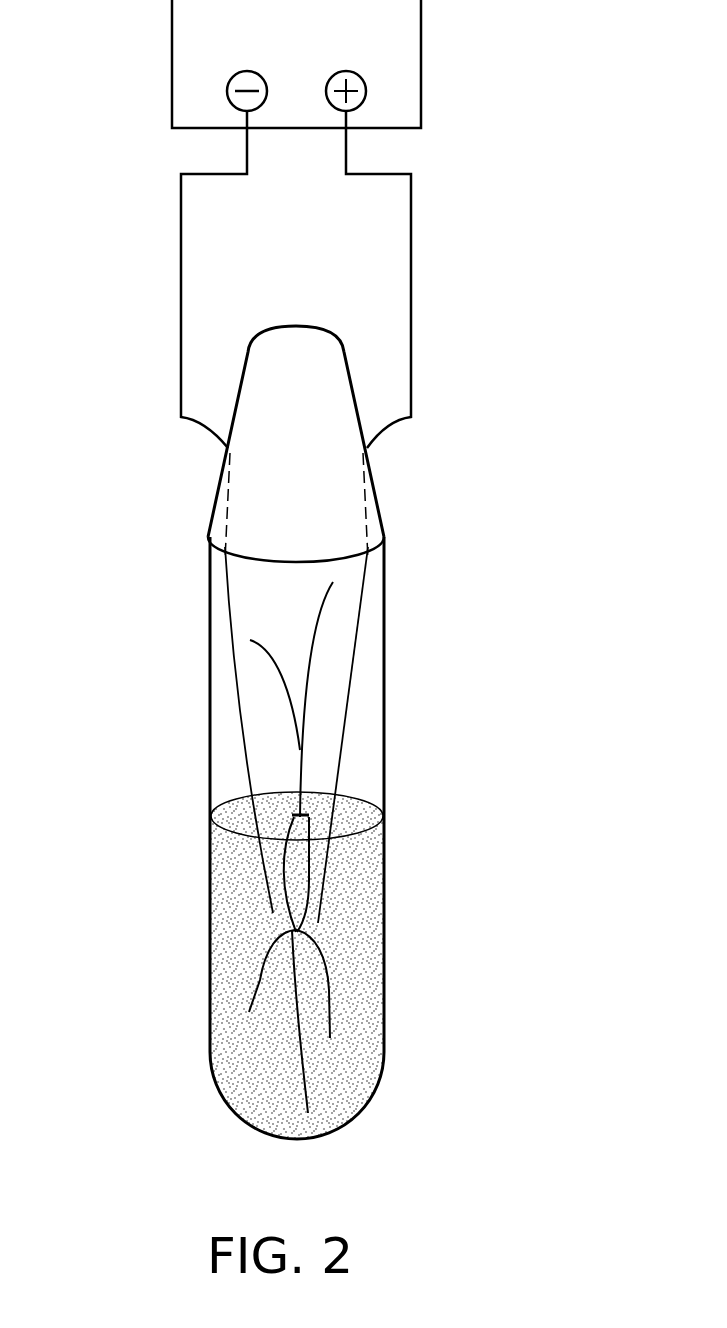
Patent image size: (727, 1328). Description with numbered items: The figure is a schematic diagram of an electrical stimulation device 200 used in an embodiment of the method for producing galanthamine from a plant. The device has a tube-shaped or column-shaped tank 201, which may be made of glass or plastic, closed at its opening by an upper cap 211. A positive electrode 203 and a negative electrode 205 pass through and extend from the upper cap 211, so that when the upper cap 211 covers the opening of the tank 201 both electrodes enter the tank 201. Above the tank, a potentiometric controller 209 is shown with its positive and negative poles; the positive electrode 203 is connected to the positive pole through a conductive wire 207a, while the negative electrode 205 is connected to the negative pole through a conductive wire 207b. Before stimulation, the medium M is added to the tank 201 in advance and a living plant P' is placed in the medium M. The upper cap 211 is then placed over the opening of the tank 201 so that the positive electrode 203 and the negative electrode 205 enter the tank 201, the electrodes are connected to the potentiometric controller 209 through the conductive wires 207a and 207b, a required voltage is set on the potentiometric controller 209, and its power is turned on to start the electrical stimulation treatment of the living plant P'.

The electrical stimulation device 200 is at (92, 1146).
The tank 201 is at (385, 770).
The positive electrode 203 is at (355, 682).
The negative electrode 205 is at (240, 686).
The conductive wire 207a is at (411, 239).
The conductive wire 207b is at (181, 243).
The potentiometric controller 209 is at (324, 36).
The upper cap 211 is at (296, 326).
The living plant P' is at (242, 847).
The medium M is at (350, 1087).